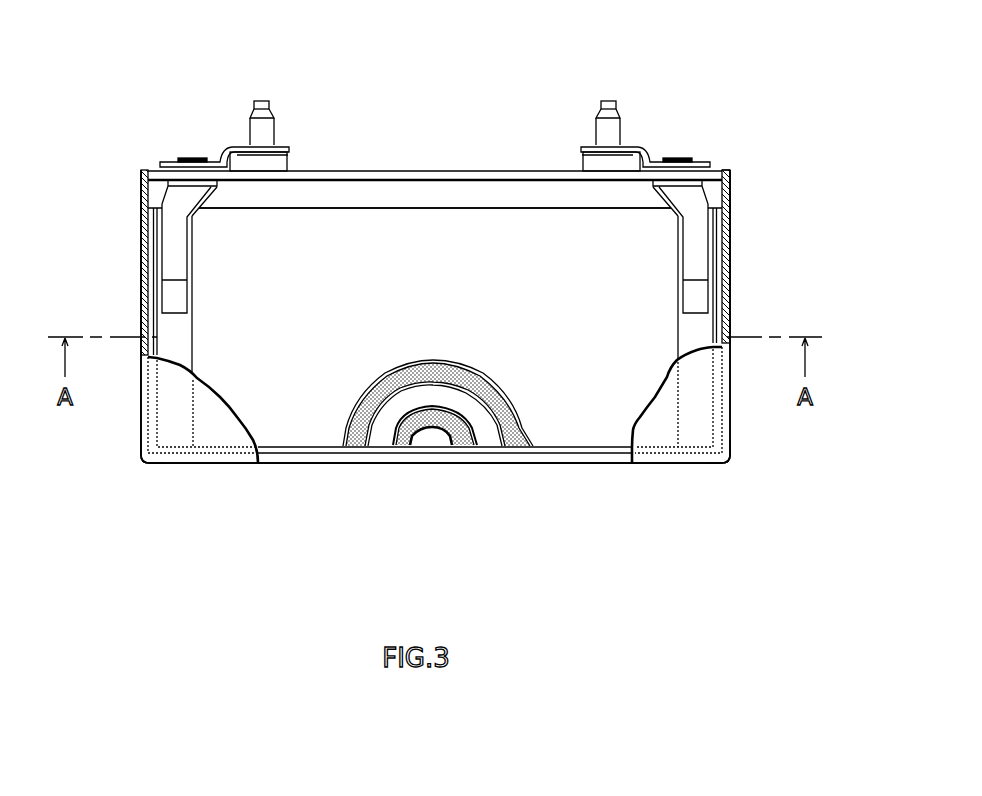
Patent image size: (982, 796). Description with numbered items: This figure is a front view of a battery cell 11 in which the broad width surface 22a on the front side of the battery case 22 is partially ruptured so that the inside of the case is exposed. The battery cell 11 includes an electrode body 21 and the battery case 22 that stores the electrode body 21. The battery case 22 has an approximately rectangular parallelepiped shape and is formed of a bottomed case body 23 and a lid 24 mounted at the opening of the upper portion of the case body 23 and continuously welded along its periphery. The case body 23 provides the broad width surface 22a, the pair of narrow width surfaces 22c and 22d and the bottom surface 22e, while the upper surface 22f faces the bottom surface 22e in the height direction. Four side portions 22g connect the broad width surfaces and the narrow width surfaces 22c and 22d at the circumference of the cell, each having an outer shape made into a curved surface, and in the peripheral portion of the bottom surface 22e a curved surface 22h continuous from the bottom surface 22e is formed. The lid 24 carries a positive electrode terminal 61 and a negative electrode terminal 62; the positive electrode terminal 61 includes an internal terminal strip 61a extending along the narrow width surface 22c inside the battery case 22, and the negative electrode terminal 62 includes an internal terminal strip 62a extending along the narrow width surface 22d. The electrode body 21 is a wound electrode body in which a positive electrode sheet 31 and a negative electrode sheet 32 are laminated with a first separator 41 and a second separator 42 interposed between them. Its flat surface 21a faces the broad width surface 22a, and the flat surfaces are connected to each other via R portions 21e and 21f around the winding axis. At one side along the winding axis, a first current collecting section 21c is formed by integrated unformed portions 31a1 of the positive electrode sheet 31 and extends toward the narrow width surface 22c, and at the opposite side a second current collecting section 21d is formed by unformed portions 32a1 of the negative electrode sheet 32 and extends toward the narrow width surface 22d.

The battery cell 11 is at (345, 82).
The electrode body 21 is at (326, 203).
The flat surface 21a is at (407, 310).
The first current collecting section 21c is at (188, 329).
The second current collecting section 21d is at (684, 330).
The R portion 21e is at (552, 448).
The R portion 21f is at (522, 205).
The battery case 22 is at (433, 150).
The broad width surface 22a is at (213, 420).
The narrow width surface 22c is at (140, 252).
The narrow width surface 22d is at (732, 255).
The bottom surface 22e is at (363, 464).
The upper surface 22f is at (377, 170).
The side portion 22g is at (140, 426).
The curved surface 22h is at (673, 465).
The case body 23 is at (731, 196).
The lid 24 is at (460, 170).
The positive electrode sheet 31 is at (463, 438).
The unformed portion 31a1 is at (172, 330).
The negative electrode sheet 32 is at (497, 399).
The unformed portion 32a1 is at (701, 328).
The first separator 41 is at (444, 397).
The second separator 42 is at (435, 436).
The positive electrode terminal 61 is at (276, 93).
The internal terminal strip 61a is at (188, 262).
The negative electrode terminal 62 is at (596, 93).
The internal terminal strip 62a is at (678, 262).